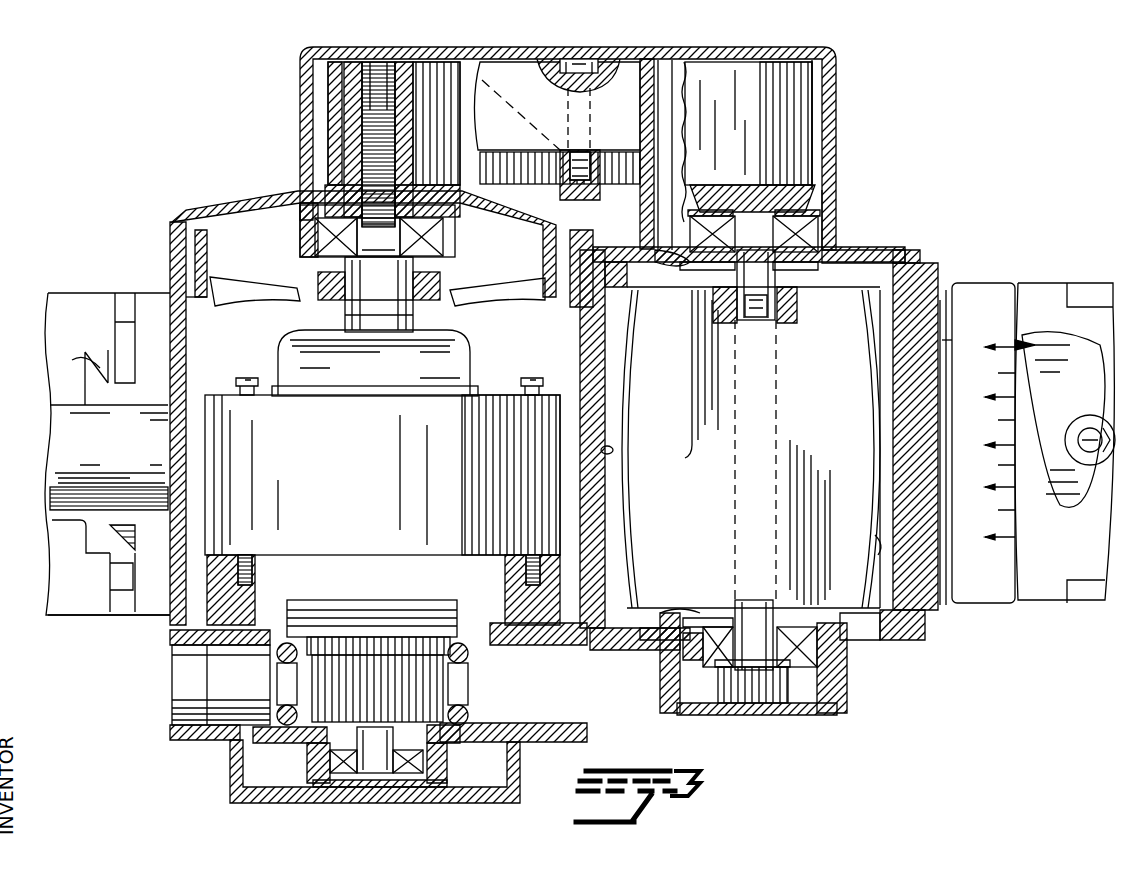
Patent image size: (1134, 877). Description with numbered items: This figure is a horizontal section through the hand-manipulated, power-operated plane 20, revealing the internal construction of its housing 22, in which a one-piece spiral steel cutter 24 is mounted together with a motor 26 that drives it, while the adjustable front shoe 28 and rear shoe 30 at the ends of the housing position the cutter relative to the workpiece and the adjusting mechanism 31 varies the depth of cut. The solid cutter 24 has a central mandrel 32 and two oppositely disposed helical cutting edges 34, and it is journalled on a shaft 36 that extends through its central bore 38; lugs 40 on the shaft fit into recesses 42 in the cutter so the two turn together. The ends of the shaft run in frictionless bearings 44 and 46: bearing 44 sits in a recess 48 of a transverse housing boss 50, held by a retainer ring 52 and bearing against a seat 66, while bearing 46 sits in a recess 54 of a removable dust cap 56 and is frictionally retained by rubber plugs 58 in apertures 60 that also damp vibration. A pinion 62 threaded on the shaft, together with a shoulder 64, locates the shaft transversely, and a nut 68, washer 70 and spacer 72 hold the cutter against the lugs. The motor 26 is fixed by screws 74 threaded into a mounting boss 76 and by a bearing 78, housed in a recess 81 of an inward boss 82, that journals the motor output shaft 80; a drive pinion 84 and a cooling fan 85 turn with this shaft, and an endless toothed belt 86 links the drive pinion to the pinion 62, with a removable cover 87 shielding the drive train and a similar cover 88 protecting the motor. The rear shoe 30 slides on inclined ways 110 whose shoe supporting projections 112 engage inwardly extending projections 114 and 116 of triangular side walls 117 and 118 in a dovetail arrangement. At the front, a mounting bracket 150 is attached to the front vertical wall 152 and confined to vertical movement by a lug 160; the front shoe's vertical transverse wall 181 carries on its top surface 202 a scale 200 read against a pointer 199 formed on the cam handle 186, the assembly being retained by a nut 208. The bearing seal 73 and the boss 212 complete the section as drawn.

The plane 20 is at (180, 126).
The housing 22 is at (166, 244).
The cutter 24 is at (614, 338).
The motor 26 is at (382, 526).
The front shoe 28 is at (1068, 282).
The rear shoe 30 is at (88, 286).
The adjusting mechanism 31 is at (1106, 506).
The mandrel 32 is at (708, 395).
The cutting edges 34 is at (878, 298).
The shaft 36 is at (740, 551).
The central bore 38 is at (735, 522).
The lugs 40 is at (742, 272).
The recesses 42 is at (770, 320).
The bearing 44 is at (820, 223).
The bearing 46 is at (816, 662).
The recess 48 is at (668, 224).
The boss 50 is at (826, 176).
The retainer ring 52 is at (822, 216).
The recess 54 is at (842, 665).
The dust cap 56 is at (762, 714).
The rubber plugs 58 is at (690, 640).
The apertures 60 is at (680, 677).
The pinion 62 is at (808, 155).
The shoulder 64 is at (778, 258).
The seat 66 is at (680, 263).
The nut 68 is at (792, 700).
The washer 70 is at (792, 690).
The spacer 72 is at (735, 625).
The retaining ring 73 is at (676, 612).
The screws 74 is at (226, 380).
The mounting boss 76 is at (530, 566).
The bearing 78 is at (318, 236).
The motor output shaft 80 is at (372, 137).
The recess 81 is at (446, 241).
The boss 82 is at (316, 250).
The drive pinion 84 is at (342, 92).
The fan 85 is at (240, 302).
The toothed belt 86 is at (736, 78).
The cover 87 is at (503, 64).
The cover 88 is at (452, 806).
The ways 110 is at (128, 350).
The shoe supporting projections 112 is at (106, 380).
The projection 114 is at (72, 355).
The projection 116 is at (78, 528).
The side wall 117 is at (50, 313).
The side wall 118 is at (98, 616).
The front shoe mounting bracket 150 is at (946, 600).
The front vertical wall 152 is at (892, 515).
The lug 160 is at (942, 346).
The vertical transverse wall member 181 is at (895, 405).
The handle 186 is at (1082, 515).
The pointer 199 is at (1012, 344).
The scale 200 is at (987, 578).
The top surface 202 is at (990, 285).
The nut 208 is at (1086, 430).
The boss 212 is at (602, 450).